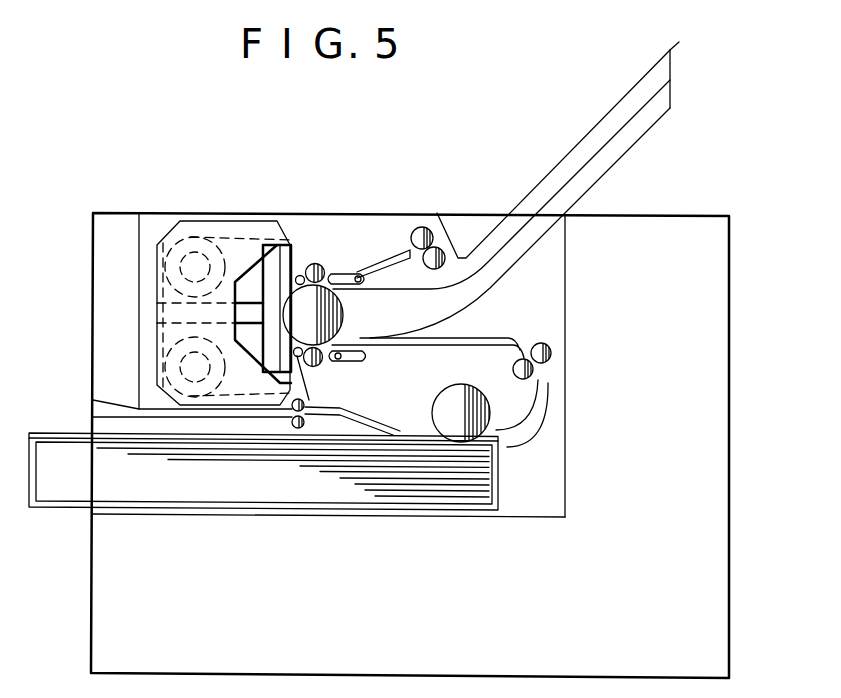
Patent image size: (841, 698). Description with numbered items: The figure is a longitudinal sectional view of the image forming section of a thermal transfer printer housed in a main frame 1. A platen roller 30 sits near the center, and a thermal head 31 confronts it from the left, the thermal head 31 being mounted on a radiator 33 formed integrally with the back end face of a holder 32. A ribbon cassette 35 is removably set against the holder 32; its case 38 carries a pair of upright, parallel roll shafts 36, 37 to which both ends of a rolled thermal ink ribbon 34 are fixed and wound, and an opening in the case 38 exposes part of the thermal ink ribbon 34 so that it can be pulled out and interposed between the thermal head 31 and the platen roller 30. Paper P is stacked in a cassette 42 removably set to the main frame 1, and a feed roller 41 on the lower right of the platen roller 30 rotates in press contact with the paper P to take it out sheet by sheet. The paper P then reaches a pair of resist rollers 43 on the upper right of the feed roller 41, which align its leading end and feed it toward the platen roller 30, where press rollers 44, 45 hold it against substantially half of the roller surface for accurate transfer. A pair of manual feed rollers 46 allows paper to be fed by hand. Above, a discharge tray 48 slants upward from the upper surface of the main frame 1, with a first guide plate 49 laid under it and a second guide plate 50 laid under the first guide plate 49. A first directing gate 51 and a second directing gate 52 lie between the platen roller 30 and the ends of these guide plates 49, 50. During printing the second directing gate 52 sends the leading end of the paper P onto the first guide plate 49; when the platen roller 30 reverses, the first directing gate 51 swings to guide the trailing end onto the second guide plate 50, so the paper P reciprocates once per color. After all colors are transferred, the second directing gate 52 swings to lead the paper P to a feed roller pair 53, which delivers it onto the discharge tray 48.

The main frame 1 is at (722, 318).
The platen roller 30 is at (343, 313).
The thermal head 31 is at (287, 252).
The holder 32 is at (139, 320).
The radiator 33 is at (278, 265).
The thermal ink ribbon 34 is at (306, 264).
The ribbon cassette 35 is at (197, 222).
The roll shaft 36 is at (188, 247).
The roll shaft 37 is at (180, 367).
The case 38 is at (157, 272).
The feed roller 41 is at (446, 400).
The cassette 42 is at (498, 478).
The resist rollers 43 is at (538, 343).
The press roller 44 is at (317, 366).
The press roller 45 is at (322, 268).
The manual feed rollers 46 is at (295, 422).
The discharge tray 48 is at (677, 43).
The first guide plate 49 is at (597, 146).
The second guide plate 50 is at (627, 152).
The first directing gate 51 is at (358, 361).
The second directing gate 52 is at (358, 277).
The feed roller pair 53 is at (427, 228).
The paper P is at (402, 497).